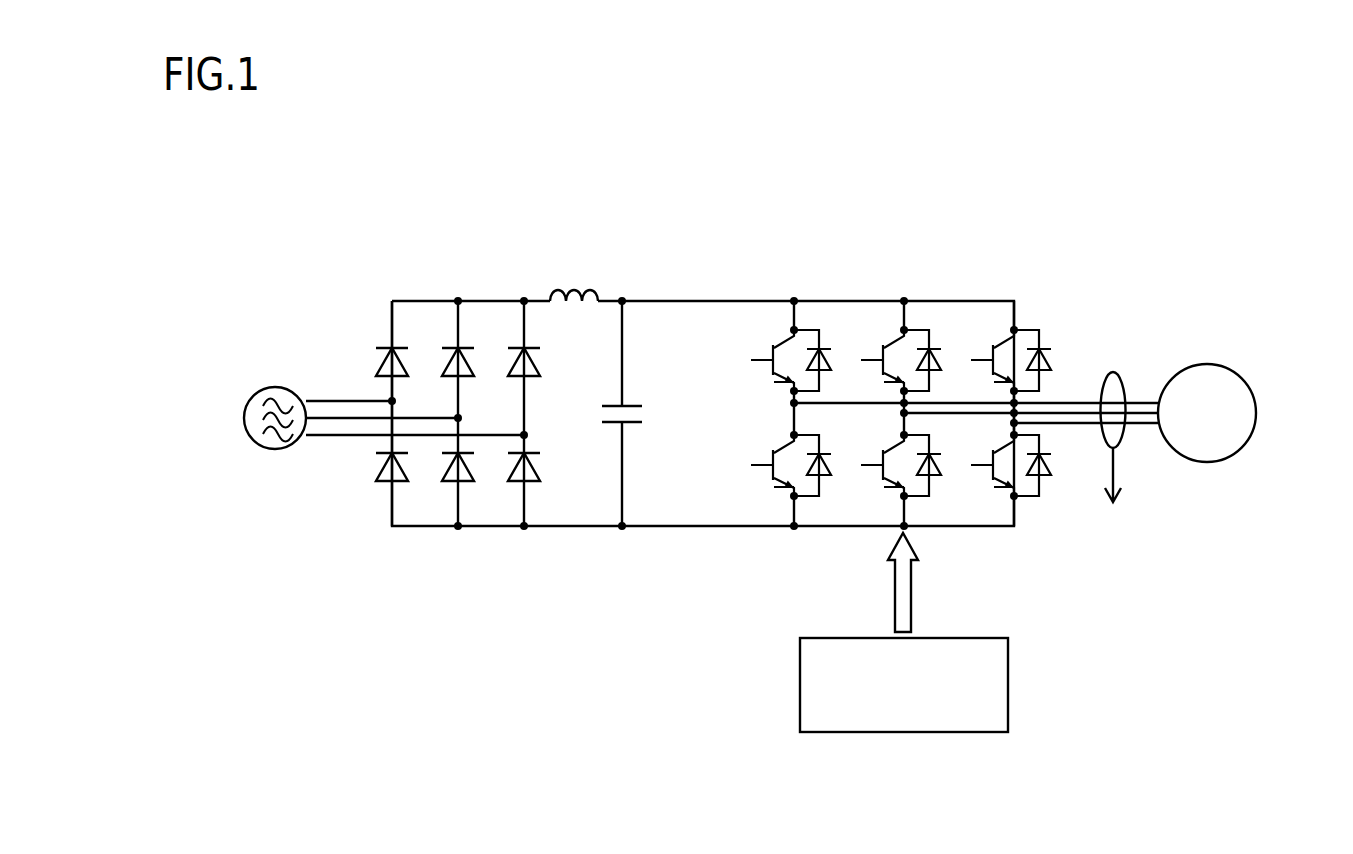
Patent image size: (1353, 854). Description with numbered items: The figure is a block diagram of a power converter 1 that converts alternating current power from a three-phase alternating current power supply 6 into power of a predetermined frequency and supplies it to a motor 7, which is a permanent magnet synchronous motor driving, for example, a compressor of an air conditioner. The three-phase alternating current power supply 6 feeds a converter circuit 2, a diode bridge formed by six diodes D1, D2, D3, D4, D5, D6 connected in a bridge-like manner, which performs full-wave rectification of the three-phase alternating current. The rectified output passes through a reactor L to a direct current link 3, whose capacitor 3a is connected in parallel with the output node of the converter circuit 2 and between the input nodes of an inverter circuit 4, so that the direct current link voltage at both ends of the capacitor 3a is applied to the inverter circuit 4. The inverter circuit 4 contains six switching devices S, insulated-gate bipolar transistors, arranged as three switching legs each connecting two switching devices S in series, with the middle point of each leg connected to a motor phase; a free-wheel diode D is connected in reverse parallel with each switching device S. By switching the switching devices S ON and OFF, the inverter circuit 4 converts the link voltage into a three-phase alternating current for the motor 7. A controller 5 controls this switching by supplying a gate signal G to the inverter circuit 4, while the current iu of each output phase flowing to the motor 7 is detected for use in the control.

The power converter 1 is at (812, 178).
The converter circuit 2 is at (499, 282).
The direct current link 3 is at (655, 282).
The capacitor 3a is at (612, 424).
The inverter circuit 4 is at (947, 282).
The controller 5 is at (1008, 683).
The three-phase alternating current power supply 6 is at (277, 388).
The motor 7 is at (1205, 365).
The reactor L is at (572, 279).
The diode D1 is at (397, 349).
The diode D2 is at (463, 349).
The diode D3 is at (529, 349).
The diode D4 is at (402, 482).
The diode D5 is at (468, 482).
The diode D6 is at (534, 482).
The switching device S is at (772, 360).
The free-wheel diode D is at (830, 349).
The gate signal G is at (914, 582).
The current of each phase iu is at (1124, 456).